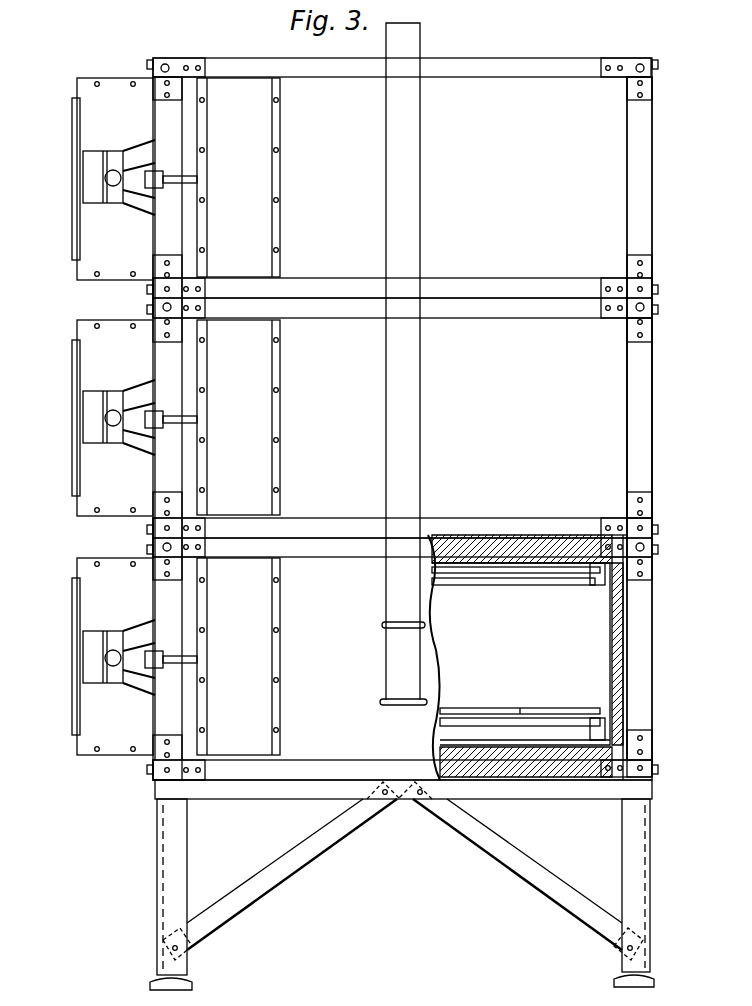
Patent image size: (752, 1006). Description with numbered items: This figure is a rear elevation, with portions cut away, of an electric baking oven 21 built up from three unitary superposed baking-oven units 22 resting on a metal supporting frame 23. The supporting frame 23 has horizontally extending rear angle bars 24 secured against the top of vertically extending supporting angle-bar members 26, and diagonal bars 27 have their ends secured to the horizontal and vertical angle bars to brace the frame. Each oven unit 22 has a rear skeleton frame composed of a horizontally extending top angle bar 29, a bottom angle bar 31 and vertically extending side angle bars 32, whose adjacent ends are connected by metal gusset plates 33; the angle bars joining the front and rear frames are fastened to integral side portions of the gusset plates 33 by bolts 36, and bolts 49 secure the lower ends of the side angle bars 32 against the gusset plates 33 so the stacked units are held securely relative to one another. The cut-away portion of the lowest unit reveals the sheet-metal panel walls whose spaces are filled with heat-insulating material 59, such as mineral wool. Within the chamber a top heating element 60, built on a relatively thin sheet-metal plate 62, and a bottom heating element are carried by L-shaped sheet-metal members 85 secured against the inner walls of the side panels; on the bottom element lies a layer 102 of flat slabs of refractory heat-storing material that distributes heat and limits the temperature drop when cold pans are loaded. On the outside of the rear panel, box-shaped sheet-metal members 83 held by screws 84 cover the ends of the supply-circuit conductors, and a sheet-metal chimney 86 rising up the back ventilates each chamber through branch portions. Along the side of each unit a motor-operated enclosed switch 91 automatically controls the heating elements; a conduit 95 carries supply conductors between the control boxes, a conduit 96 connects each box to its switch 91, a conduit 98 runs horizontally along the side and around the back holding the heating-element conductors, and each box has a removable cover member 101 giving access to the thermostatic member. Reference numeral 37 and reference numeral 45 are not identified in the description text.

The electric baking oven 21 is at (703, 416).
The baking-oven unit 22 is at (585, 198).
The supporting frame 23 is at (700, 871).
The front and rear angle bar 24 is at (580, 788).
The supporting angle-bar member 26 is at (175, 868).
The brace bar 27 is at (272, 886).
The top angle bar 29 is at (540, 68).
The bottom angle bar 31 is at (495, 290).
The side angle bar 32 is at (165, 128).
The gusset plate 33 is at (173, 70).
The bolt 36 is at (148, 64).
The oven chamber wall 37 is at (568, 657).
The insulation 45 is at (490, 550).
The bolt 49 is at (636, 309).
The heat-insulating material 59 is at (616, 622).
The top heating element 60 is at (540, 587).
The sheet-metal plate 62 is at (540, 720).
The sheet metal member 83 is at (250, 186).
The screw 84 is at (280, 258).
The sheet-metal member 85 is at (600, 580).
The chimney 86 is at (407, 207).
The motor-operated enclosed switch 91 is at (90, 194).
The conduit 95 is at (76, 306).
The conduit 96 is at (115, 428).
The conduit 98 is at (176, 184).
The removable cover member 101 is at (80, 166).
The layer of refractory heat-storing material 102 is at (490, 683).